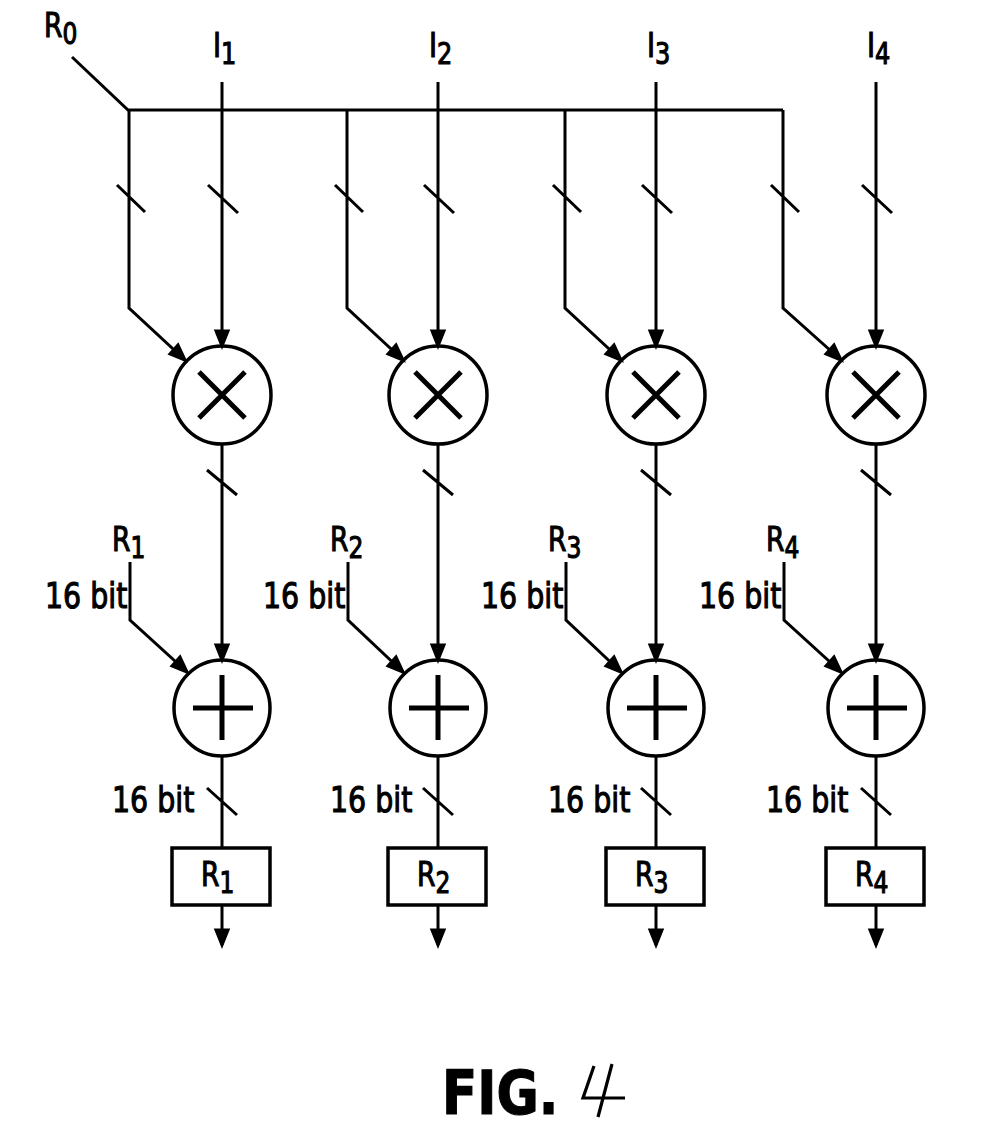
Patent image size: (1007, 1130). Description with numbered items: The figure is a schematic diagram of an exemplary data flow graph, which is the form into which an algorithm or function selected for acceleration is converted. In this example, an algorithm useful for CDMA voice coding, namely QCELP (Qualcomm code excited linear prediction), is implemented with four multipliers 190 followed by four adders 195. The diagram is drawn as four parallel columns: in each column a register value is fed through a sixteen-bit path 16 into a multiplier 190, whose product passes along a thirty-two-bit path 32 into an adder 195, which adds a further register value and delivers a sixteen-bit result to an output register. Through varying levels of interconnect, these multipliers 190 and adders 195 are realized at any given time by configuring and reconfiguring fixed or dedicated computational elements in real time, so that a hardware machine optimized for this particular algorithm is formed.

The multiplier 190 is at (178, 410).
The adder 195 is at (178, 725).
The 16-bit data path 16 is at (494, 235).
The 32-bit data path 32 is at (505, 552).